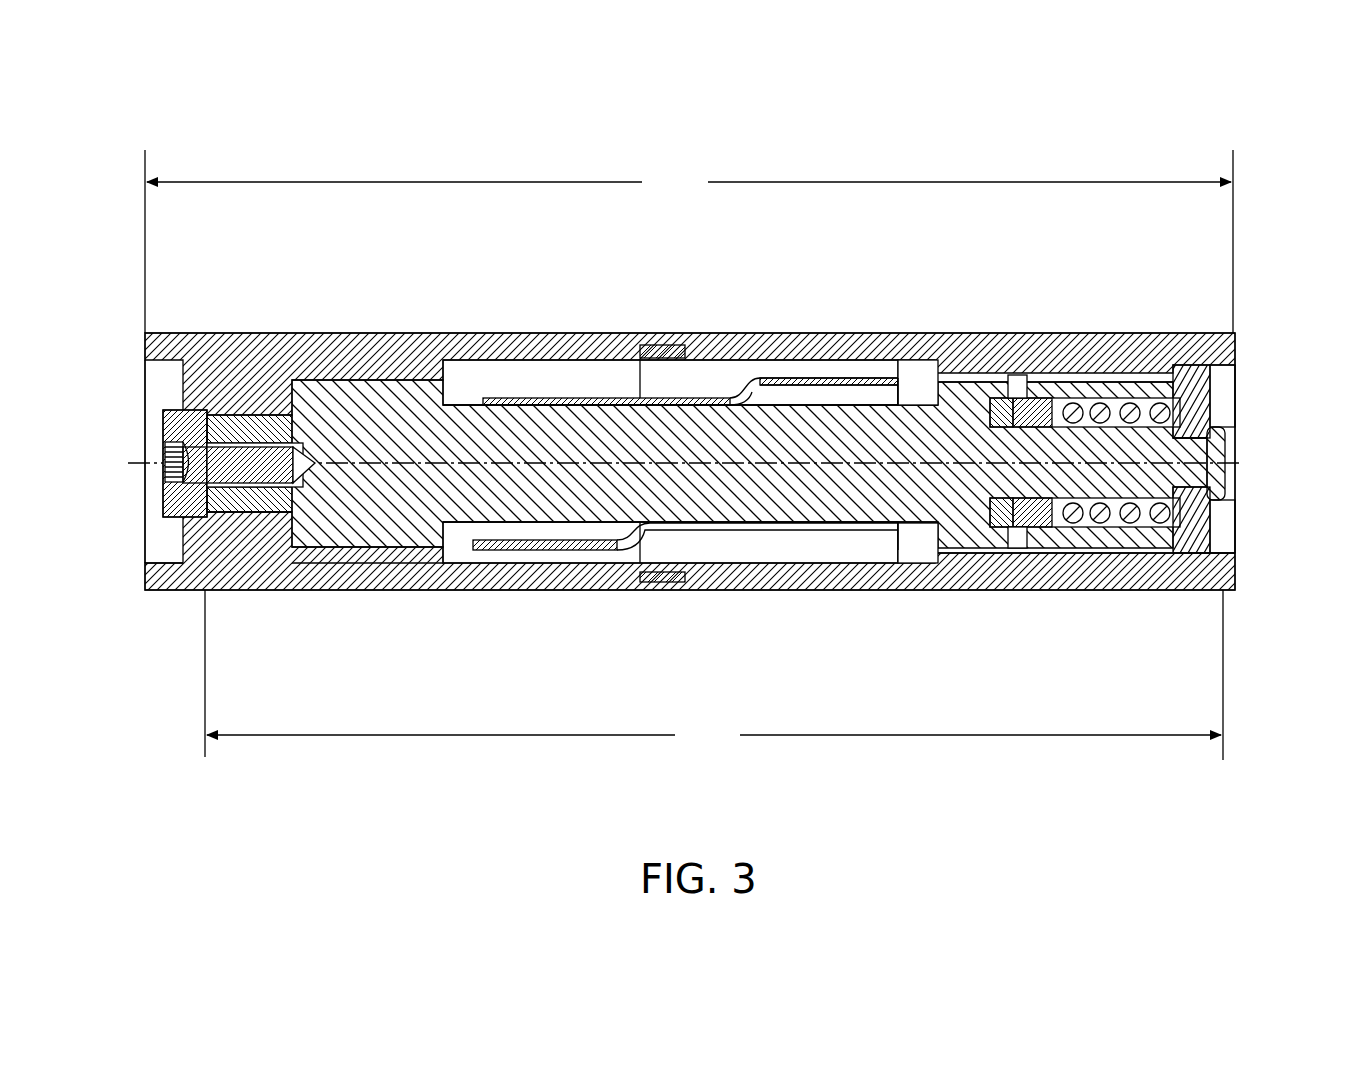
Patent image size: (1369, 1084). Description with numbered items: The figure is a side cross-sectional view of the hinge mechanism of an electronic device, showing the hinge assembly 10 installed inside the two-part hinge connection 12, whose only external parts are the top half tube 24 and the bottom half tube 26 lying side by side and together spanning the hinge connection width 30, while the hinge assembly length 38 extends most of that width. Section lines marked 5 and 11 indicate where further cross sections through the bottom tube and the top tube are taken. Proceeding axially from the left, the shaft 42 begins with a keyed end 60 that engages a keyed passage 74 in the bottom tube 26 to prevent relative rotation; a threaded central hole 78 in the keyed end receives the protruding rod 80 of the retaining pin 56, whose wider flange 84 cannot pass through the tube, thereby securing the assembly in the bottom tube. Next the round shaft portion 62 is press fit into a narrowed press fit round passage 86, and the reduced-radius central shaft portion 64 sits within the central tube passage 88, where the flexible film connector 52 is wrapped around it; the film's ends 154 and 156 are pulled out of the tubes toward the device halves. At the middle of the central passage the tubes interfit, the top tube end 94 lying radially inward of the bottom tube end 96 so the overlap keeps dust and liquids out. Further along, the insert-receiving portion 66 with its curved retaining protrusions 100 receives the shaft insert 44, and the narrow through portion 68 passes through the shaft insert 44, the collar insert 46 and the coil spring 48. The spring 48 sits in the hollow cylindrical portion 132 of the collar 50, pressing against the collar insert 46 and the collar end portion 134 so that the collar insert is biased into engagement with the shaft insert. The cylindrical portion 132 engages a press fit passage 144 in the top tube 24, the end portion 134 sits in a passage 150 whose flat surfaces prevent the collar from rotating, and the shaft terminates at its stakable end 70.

The hinge assembly 10 is at (1242, 410).
The hinge connection 12 is at (213, 138).
The top half tube 24 is at (1237, 583).
The bottom half tube 26 is at (167, 582).
The hinge connection width 30 is at (689, 241).
The hinge assembly length 38 is at (714, 675).
The shaft 42 is at (466, 378).
The shaft insert 44 is at (983, 395).
The collar insert 46 is at (1022, 405).
The coil spring 48 is at (1105, 400).
The collar 50 is at (1222, 392).
The flexible film connector 52 is at (565, 398).
The retaining pin 56 is at (152, 515).
The keyed end 60 is at (246, 427).
The round shaft portion 62 is at (368, 403).
The central shaft portion 64 is at (523, 420).
The insert-receiving portion 66 is at (958, 392).
The through portion 68 is at (1148, 440).
The stakable end 70 is at (1212, 450).
The keyed passage 74 is at (267, 524).
The central hole 78 is at (298, 474).
The protruding rod 80 is at (215, 435).
The retaining pin flange 84 is at (167, 425).
The press fit round passage 86 is at (400, 568).
The central tube passage 88 is at (458, 550).
The top tube end 94 is at (670, 352).
The bottom tube end 96 is at (658, 345).
The curved retaining protrusions 100 is at (1000, 410).
The hollow cylindrical portion 132 is at (1088, 387).
The end portion 134 is at (1190, 540).
The press fit passage 144 is at (1122, 567).
The passage 150 is at (1232, 495).
The flexible film end 154 is at (812, 385).
The flexible film end 156 is at (560, 547).
The section line 5 is at (252, 315).
The section line 11 is at (1192, 320).